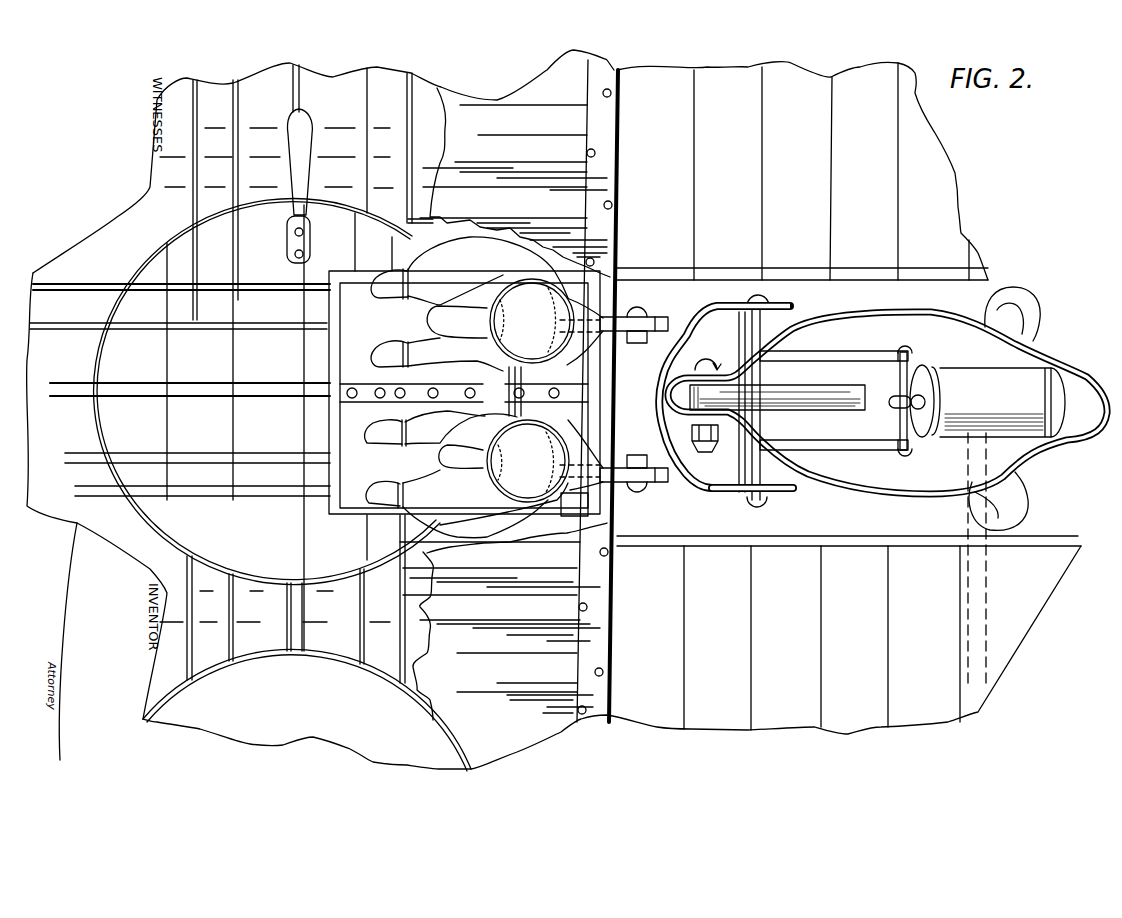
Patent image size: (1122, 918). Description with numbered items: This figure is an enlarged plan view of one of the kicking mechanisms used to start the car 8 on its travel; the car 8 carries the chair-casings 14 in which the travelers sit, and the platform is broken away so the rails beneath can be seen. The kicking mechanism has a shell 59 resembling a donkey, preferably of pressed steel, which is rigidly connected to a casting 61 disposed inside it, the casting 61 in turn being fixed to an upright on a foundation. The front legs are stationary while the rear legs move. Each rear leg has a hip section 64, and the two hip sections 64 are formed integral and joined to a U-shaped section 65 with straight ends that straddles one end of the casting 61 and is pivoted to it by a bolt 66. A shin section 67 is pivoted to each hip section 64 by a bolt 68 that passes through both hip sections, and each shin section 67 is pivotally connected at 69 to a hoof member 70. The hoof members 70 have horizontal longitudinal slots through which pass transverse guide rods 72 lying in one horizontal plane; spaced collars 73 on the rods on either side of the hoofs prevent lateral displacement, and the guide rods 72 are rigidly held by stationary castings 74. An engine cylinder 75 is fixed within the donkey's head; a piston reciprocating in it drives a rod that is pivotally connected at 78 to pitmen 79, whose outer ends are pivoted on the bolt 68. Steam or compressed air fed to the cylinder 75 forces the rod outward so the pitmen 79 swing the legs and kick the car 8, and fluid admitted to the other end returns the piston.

The car 8 is at (345, 511).
The chair-casing 14 is at (466, 387).
The shell 59 is at (901, 492).
The casting 61 is at (790, 394).
The hip section 64 is at (678, 335).
The U-shaped section 65 is at (723, 354).
The bolt 66 is at (705, 448).
The shin section 67 is at (722, 494).
The bolt 68 is at (762, 462).
The pivotal connection 69 is at (641, 305).
The hoof member 70 is at (592, 330).
The guide rod 72 is at (570, 412).
The collar 73 is at (530, 455).
The stationary casting 74 is at (561, 493).
The engine cylinder 75 is at (1002, 402).
The pivotal connection 78 is at (903, 369).
The pitman 79 is at (851, 349).